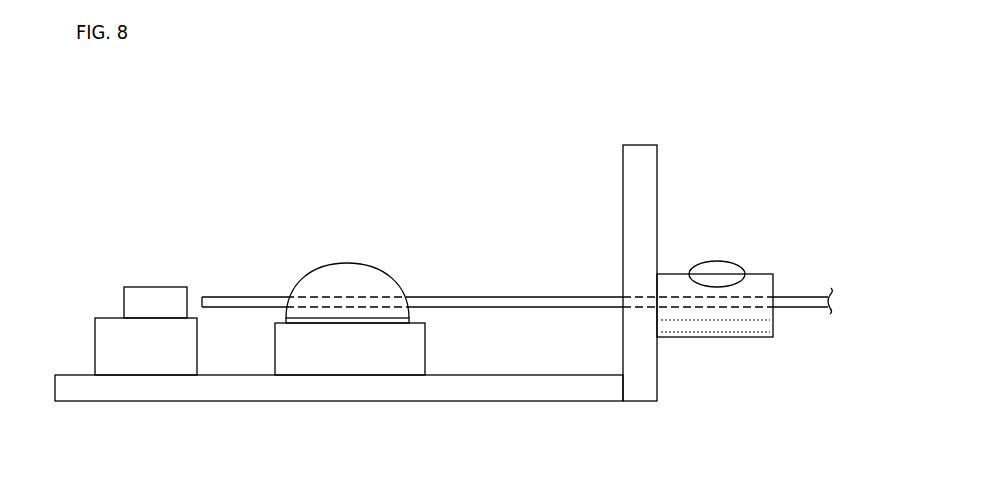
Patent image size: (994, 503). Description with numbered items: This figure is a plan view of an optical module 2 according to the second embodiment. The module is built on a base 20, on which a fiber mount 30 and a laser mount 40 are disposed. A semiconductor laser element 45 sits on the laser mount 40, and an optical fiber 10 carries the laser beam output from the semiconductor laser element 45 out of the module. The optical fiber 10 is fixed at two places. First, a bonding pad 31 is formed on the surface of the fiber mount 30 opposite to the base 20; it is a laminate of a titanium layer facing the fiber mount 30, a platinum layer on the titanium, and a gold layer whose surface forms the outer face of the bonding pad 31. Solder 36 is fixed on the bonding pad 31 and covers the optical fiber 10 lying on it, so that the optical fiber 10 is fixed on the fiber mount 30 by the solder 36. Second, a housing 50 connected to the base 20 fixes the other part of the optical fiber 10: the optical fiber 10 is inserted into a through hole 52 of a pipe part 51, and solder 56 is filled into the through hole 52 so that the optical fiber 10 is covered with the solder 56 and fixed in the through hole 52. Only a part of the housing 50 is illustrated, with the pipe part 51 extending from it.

The optical module 2 is at (655, 117).
The optical fiber 10 is at (433, 303).
The base 20 is at (260, 390).
The fiber mount 30 is at (370, 362).
The bonding pad 31 is at (393, 323).
The solder 36 is at (362, 277).
The laser mount 40 is at (125, 332).
The semiconductor laser element 45 is at (147, 303).
The housing 50 is at (665, 255).
The pipe part 51 is at (758, 278).
The through hole 52 is at (778, 313).
The solder 56 is at (730, 273).